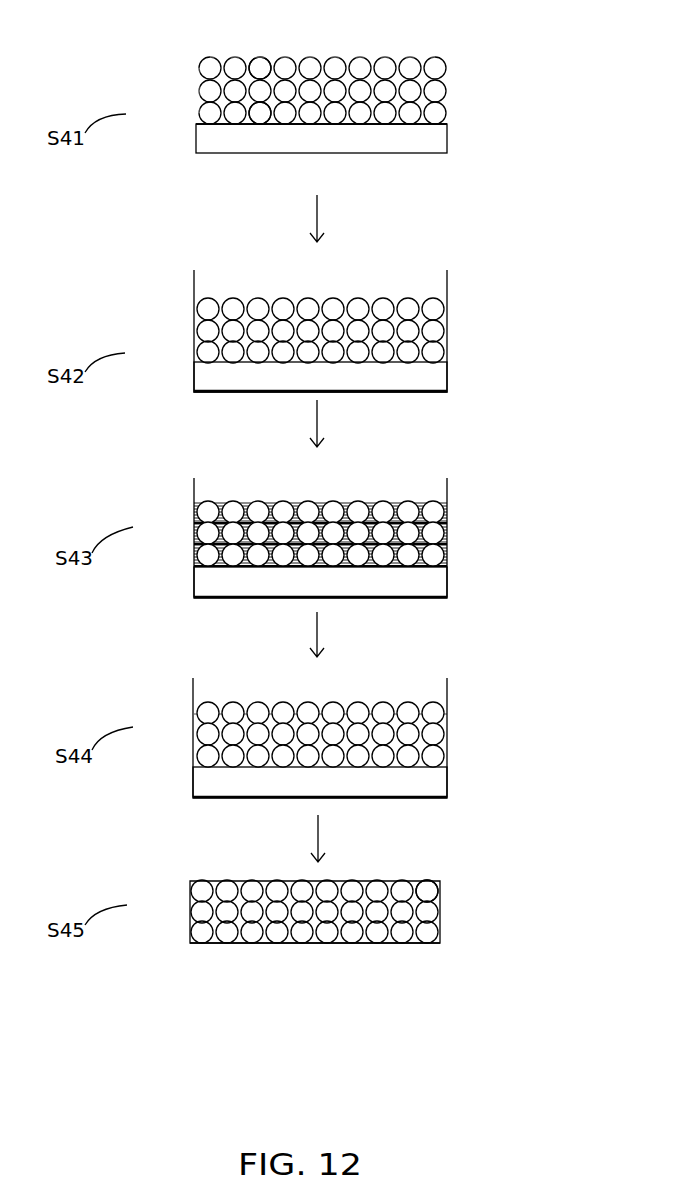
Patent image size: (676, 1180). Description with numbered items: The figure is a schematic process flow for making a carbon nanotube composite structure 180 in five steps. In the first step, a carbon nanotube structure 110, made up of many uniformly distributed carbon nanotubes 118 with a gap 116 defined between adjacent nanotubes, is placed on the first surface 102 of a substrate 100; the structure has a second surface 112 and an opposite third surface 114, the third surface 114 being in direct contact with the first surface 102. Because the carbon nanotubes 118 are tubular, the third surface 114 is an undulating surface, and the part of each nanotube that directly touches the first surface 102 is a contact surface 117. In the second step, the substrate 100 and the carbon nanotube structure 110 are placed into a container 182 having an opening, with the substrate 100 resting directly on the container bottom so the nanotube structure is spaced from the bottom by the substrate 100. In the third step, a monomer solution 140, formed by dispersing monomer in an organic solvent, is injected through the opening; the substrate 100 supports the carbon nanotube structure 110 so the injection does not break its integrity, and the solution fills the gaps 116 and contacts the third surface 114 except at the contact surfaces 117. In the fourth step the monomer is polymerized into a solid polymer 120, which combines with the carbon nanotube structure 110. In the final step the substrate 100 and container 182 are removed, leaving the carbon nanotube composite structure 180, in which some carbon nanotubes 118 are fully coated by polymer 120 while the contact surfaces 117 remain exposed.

The substrate 100 is at (430, 145).
The first surface 102 is at (220, 125).
The carbon nanotube structure 110 is at (441, 104).
The second surface 112 is at (377, 62).
The third surface 114 is at (205, 120).
The gap 116 is at (248, 115).
The contact surface 117 is at (382, 122).
The carbon nanotubes 118 is at (263, 67).
The polymer 120 is at (440, 743).
The monomer solution 140 is at (447, 543).
The carbon nanotube composite structure 180 is at (517, 865).
The container 182 is at (447, 320).